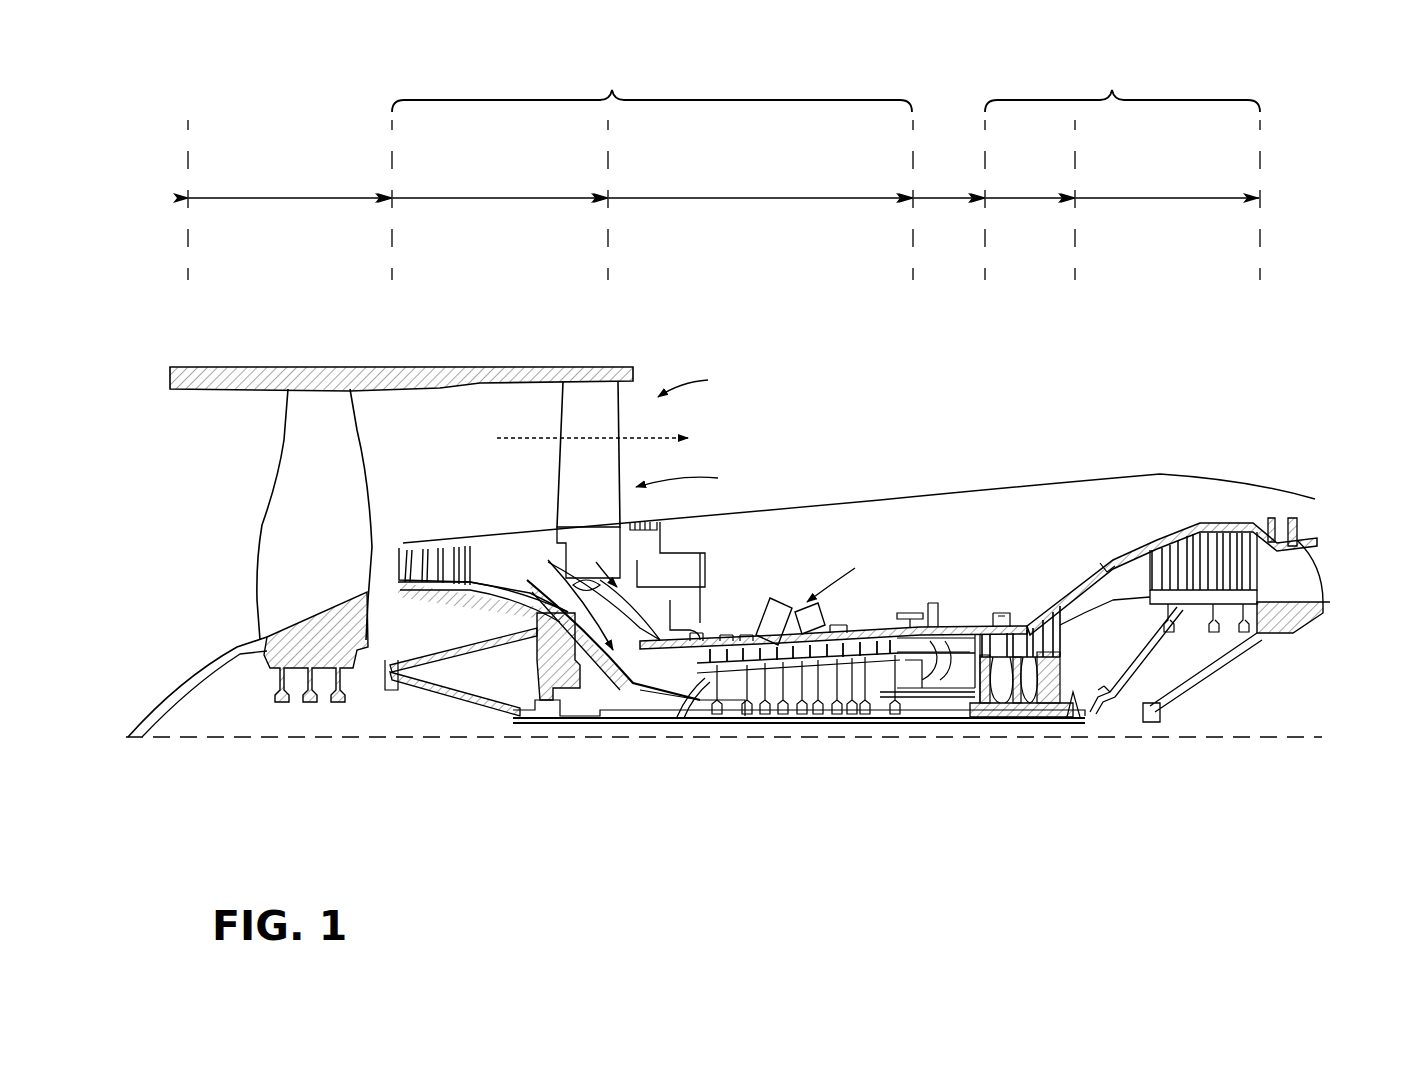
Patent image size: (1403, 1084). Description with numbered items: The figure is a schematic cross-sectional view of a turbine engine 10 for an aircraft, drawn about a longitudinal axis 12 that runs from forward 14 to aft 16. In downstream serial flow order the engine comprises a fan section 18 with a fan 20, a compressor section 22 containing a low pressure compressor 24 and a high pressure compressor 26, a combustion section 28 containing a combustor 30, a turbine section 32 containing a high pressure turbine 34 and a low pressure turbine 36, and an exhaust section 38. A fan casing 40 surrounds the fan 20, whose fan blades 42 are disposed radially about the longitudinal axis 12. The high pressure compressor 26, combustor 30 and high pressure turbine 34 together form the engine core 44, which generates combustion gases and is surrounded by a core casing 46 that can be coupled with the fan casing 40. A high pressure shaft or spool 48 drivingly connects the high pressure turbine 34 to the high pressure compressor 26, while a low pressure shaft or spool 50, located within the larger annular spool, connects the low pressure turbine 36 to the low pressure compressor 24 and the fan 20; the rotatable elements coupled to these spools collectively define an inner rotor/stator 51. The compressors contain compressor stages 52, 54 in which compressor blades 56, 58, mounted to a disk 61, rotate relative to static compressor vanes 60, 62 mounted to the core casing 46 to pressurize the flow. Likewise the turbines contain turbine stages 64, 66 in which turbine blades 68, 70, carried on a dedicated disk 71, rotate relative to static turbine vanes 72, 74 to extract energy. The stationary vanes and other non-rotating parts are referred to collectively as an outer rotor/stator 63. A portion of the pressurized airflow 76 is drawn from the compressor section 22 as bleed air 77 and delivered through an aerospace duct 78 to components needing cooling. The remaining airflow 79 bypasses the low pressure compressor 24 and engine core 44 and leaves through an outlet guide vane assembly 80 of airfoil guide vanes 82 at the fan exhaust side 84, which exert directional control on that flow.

The turbine engine 10 is at (938, 357).
The longitudinal axis 12 is at (290, 740).
The forward 14 is at (160, 500).
The aft 16 is at (1372, 582).
The fan section 18 is at (290, 200).
The fan 20 is at (226, 578).
The compressor section 22 is at (652, 85).
The low pressure compressor 24 is at (500, 200).
The high pressure compressor 26 is at (761, 200).
The combustion section 28 is at (949, 200).
The combustor 30 is at (950, 647).
The turbine section 32 is at (1122, 84).
The high pressure turbine 34 is at (1030, 200).
The low pressure turbine 36 is at (1168, 200).
The exhaust section 38 is at (1335, 545).
The fan casing 40 is at (432, 367).
The fan blades 42 is at (343, 443).
The engine core 44 is at (898, 538).
The core casing 46 is at (1123, 547).
The HP shaft or spool 48 is at (925, 700).
The LP shaft or spool 50 is at (540, 725).
The inner rotor/stator 51 is at (797, 737).
The compressor stages 52 is at (453, 484).
The compressor stages 54 is at (738, 527).
The compressor blades 56 is at (427, 550).
The compressor blades 58 is at (693, 610).
The static compressor vanes 60 is at (407, 550).
The disk 61 is at (428, 590).
The static compressor vanes 62 is at (667, 610).
The outer rotor/stator 63 is at (1190, 515).
The turbine stages 64 is at (1050, 552).
The turbine stages 66 is at (1295, 448).
The turbine blades 68 is at (992, 630).
The turbine blades 70 is at (1240, 535).
The disk 71 is at (1000, 720).
The static turbine vanes 72 is at (980, 635).
The static turbine vanes 74 is at (1225, 540).
The pressurized airflow 76 is at (582, 593).
The bleed air 77 is at (782, 622).
The aerospace duct 78 is at (846, 574).
The airflow 79 is at (497, 438).
The outlet guide vane assembly 80 is at (694, 479).
The airfoil guide vanes 82 is at (570, 477).
The fan exhaust side 84 is at (699, 381).